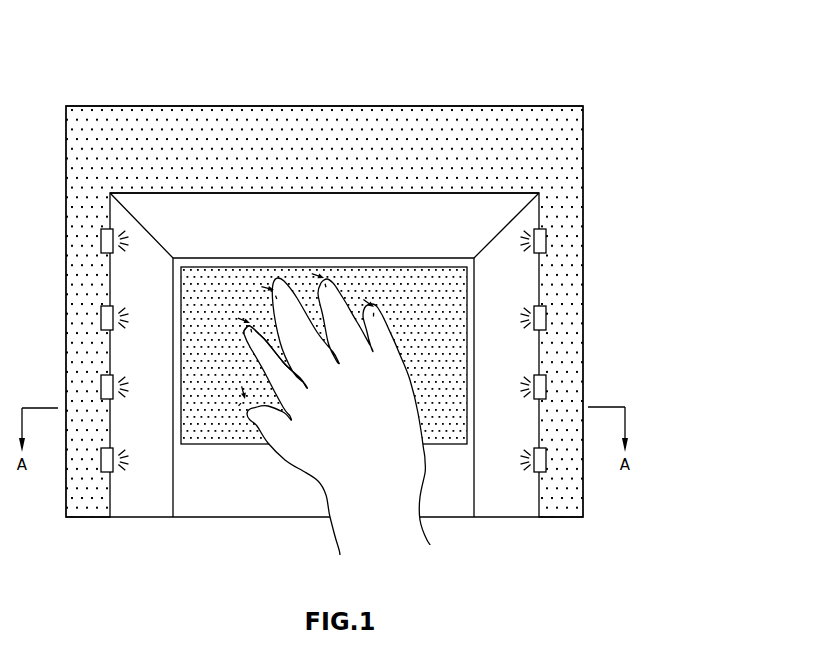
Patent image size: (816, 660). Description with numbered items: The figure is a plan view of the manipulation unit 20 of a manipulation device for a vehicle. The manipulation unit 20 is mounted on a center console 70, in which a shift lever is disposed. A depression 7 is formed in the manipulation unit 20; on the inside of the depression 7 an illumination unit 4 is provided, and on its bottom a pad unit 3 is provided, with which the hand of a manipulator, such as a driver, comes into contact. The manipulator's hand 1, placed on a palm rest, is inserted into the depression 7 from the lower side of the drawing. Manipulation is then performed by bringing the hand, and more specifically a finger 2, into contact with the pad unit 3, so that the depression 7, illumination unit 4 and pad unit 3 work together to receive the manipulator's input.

The hand 1 is at (425, 473).
The finger 2 is at (250, 347).
The pad unit 3 is at (243, 447).
The illumination unit 4 is at (100, 239).
The depression 7 is at (247, 193).
The manipulation unit 20 is at (175, 80).
The center console 70 is at (583, 142).